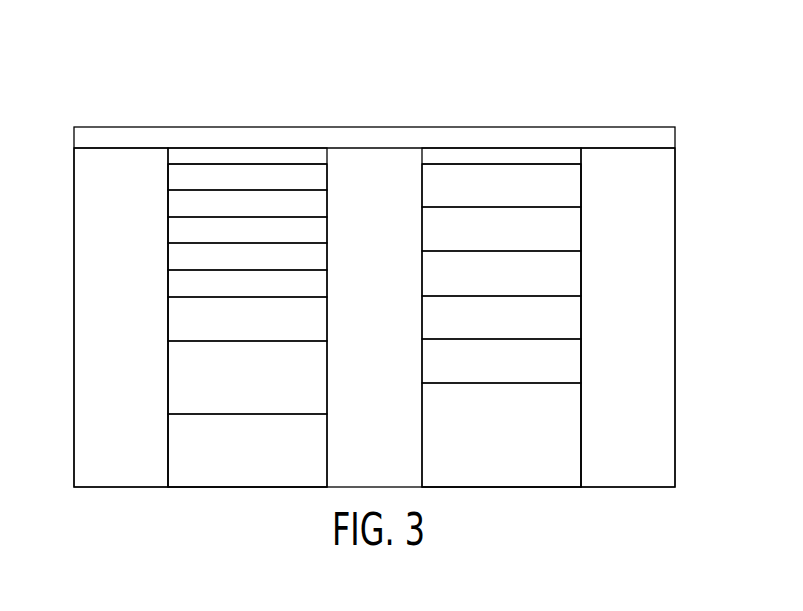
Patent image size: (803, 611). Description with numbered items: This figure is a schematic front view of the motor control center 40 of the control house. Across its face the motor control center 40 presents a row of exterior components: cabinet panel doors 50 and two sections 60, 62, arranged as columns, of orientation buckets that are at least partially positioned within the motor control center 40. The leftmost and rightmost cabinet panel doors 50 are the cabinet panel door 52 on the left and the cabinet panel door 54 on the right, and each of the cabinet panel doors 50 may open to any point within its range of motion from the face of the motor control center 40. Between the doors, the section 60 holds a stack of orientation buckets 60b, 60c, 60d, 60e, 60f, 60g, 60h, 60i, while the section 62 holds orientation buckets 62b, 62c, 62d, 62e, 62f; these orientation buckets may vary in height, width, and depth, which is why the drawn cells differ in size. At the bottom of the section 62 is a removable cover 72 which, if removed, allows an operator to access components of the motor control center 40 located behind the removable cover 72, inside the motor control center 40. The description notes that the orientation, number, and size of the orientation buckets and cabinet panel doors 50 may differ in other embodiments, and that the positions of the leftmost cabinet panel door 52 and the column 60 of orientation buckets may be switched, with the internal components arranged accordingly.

The motor control center 40 is at (101, 94).
The cabinet panel doors 50 is at (136, 304).
The leftmost cabinet panel door 52 is at (136, 356).
The rightmost cabinet panel door 54 is at (638, 356).
The section of orientation buckets 60 is at (241, 104).
The orientation bucket 60b is at (265, 187).
The orientation bucket 60c is at (265, 214).
The orientation bucket 60d is at (265, 241).
The orientation bucket 60e is at (265, 267).
The orientation bucket 60f is at (265, 294).
The orientation bucket 60g is at (265, 330).
The orientation bucket 60h is at (265, 387).
The orientation bucket 60i is at (265, 457).
The section of orientation buckets 62 is at (518, 109).
The orientation bucket 62b is at (518, 194).
The orientation bucket 62c is at (518, 239).
The orientation bucket 62d is at (518, 281).
The orientation bucket 62e is at (518, 326).
The orientation bucket 62f is at (518, 371).
The removable cover 72 is at (515, 439).